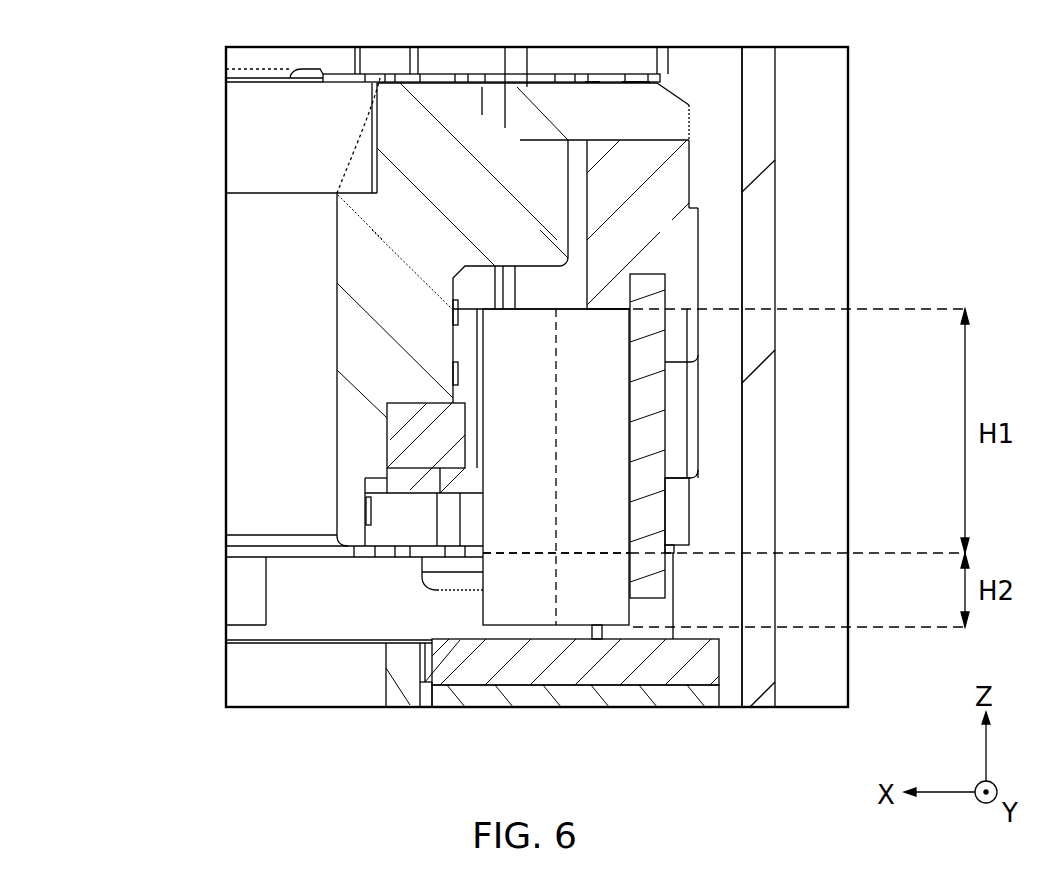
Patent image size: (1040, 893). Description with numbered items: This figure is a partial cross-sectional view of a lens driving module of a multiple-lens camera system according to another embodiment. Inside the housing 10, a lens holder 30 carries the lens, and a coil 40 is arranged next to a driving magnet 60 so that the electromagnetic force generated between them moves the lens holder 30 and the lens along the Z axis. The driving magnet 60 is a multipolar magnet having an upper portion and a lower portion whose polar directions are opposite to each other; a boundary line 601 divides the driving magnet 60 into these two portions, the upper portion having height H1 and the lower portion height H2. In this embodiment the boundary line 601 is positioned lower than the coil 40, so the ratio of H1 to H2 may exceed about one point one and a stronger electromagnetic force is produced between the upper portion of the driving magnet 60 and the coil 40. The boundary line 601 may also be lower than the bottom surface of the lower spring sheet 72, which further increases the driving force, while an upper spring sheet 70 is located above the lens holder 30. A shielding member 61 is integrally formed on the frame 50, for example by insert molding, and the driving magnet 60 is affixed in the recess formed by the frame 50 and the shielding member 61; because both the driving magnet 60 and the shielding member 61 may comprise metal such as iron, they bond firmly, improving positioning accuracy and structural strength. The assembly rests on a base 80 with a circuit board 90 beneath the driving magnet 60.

The housing 10 is at (757, 107).
The lens holder 30 is at (368, 345).
The coil 40 is at (415, 443).
The frame 50 is at (660, 190).
The driving magnet 60 is at (520, 612).
The shielding member 61 is at (655, 418).
The boundary line 601 is at (588, 553).
The first elastic element 70 is at (348, 78).
The lower spring sheet 72 is at (322, 550).
The base 80 is at (685, 695).
The circuit board 90 is at (593, 660).